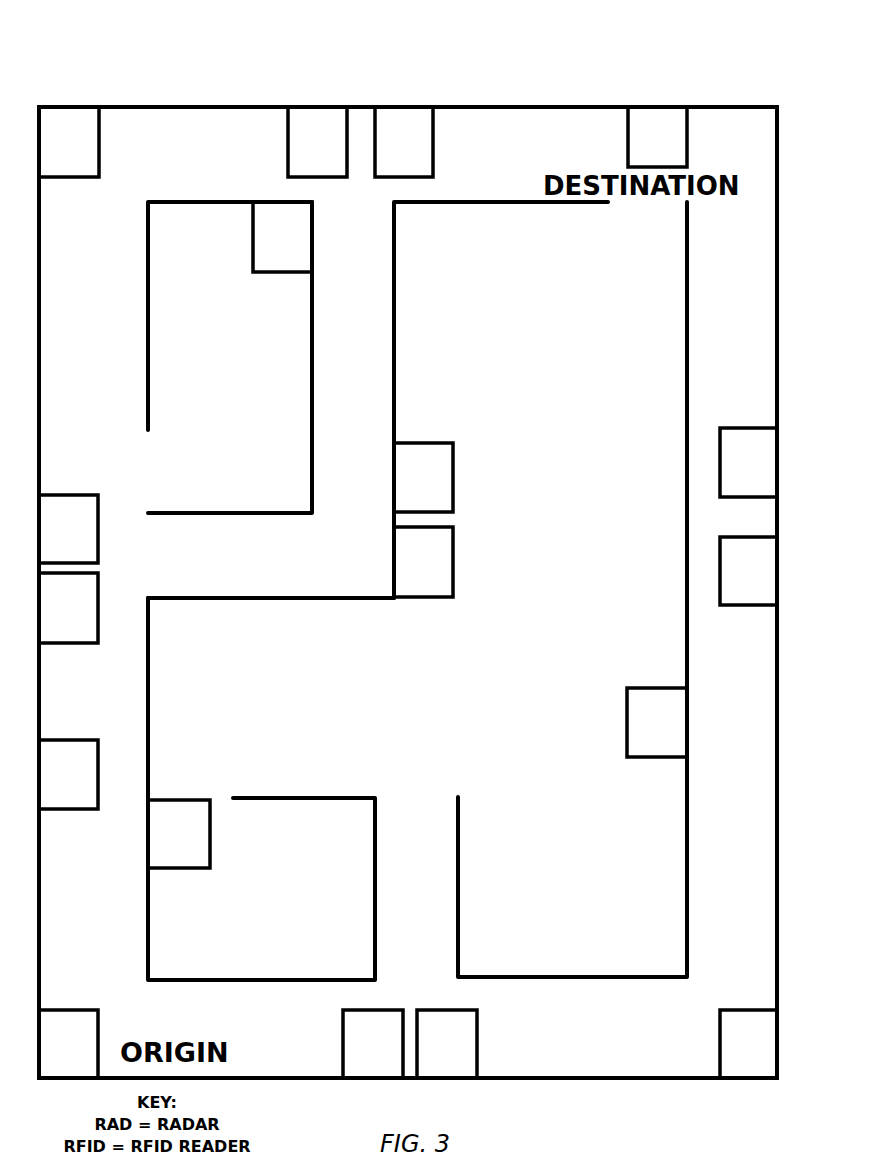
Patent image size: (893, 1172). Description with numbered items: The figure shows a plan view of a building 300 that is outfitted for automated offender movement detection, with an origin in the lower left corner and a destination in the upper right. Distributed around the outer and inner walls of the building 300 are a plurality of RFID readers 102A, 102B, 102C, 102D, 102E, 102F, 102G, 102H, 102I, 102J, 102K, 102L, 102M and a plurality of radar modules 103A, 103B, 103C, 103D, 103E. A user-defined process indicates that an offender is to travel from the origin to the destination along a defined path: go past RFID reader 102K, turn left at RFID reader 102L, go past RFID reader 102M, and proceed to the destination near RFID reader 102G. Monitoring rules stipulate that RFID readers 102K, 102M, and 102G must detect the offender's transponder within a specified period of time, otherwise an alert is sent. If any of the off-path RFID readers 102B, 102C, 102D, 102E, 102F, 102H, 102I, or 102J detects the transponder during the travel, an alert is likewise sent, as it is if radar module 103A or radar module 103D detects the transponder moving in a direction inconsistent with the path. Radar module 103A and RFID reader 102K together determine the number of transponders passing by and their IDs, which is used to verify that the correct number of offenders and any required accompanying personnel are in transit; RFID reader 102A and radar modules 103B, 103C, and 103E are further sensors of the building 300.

The building 300 is at (122, 66).
The RFID reader 102A is at (62, 1017).
The RFID reader 102B is at (62, 748).
The RFID reader 102C is at (62, 503).
The RFID reader 102D is at (84, 120).
The RFID reader 102E is at (398, 117).
The RFID reader 102F is at (300, 210).
The RFID reader 102G is at (641, 117).
The RFID reader 102H is at (414, 451).
The RFID reader 102I is at (636, 708).
The RFID reader 102J is at (174, 807).
The RFID reader 102K is at (469, 1036).
The RFID reader 102L is at (729, 1032).
The RFID reader 102M is at (764, 436).
The radar module 103A is at (351, 1027).
The radar module 103B is at (76, 644).
The radar module 103C is at (308, 118).
The radar module 103D is at (772, 546).
The radar module 103E is at (446, 542).